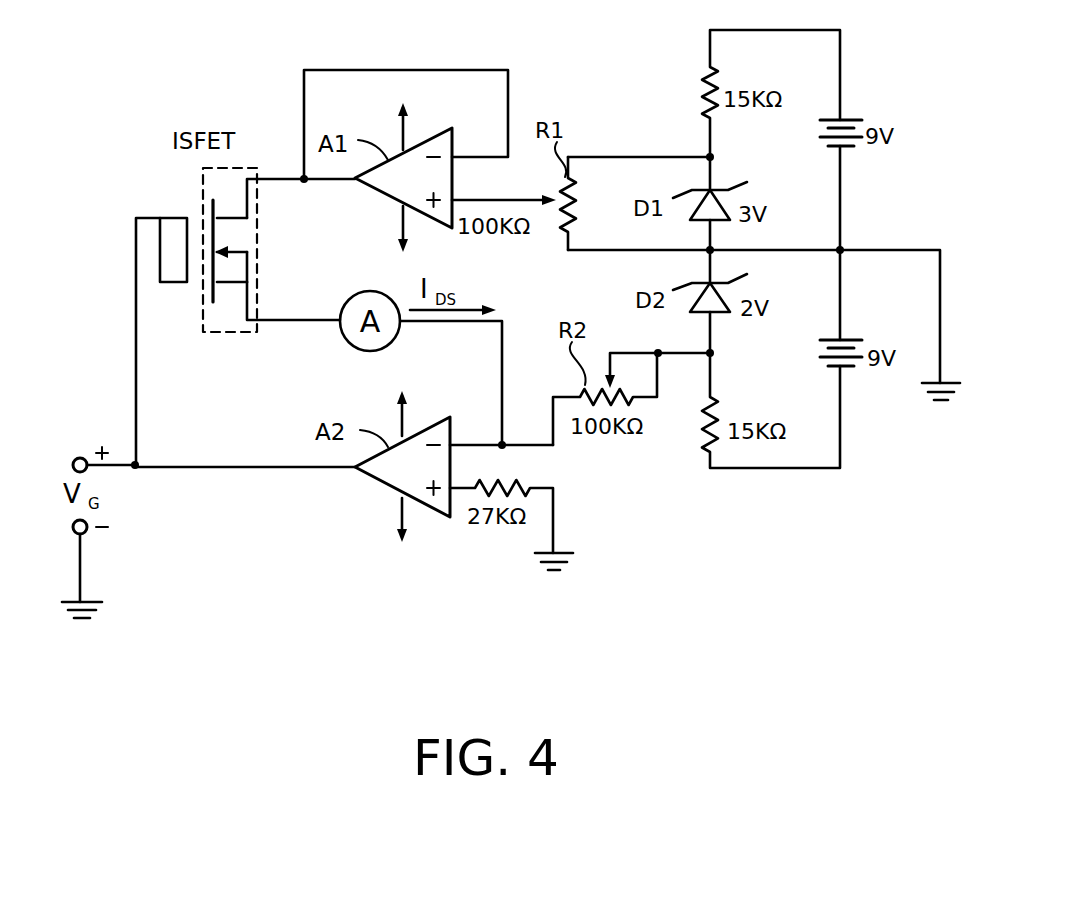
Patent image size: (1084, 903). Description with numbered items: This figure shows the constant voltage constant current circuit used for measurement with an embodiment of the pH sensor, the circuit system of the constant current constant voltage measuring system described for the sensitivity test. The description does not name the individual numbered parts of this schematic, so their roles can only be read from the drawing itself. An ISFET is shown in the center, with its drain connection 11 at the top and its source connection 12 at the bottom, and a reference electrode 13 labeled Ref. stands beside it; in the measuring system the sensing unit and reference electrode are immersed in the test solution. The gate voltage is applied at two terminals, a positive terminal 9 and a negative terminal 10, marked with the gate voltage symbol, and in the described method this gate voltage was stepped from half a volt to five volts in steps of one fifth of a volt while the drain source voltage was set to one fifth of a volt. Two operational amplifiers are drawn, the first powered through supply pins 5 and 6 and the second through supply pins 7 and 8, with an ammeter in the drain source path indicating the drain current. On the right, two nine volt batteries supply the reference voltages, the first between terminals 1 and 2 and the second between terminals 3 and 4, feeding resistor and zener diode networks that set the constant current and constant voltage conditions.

The first battery positive terminal 1 is at (843, 110).
The first battery negative terminal 2 is at (843, 193).
The second battery positive terminal 3 is at (842, 330).
The second battery negative terminal 4 is at (842, 377).
The positive supply pin of amplifier A1 5 is at (412, 126).
The negative supply pin of amplifier A1 6 is at (412, 230).
The positive supply pin of amplifier A2 7 is at (411, 413).
The negative supply pin of amplifier A2 8 is at (412, 524).
The gate voltage positive input terminal 9 is at (96, 463).
The gate voltage negative input terminal 10 is at (73, 559).
The ISFET drain terminal 11 is at (301, 184).
The ISFET source terminal 12 is at (293, 317).
The reference electrode 13 is at (132, 326).